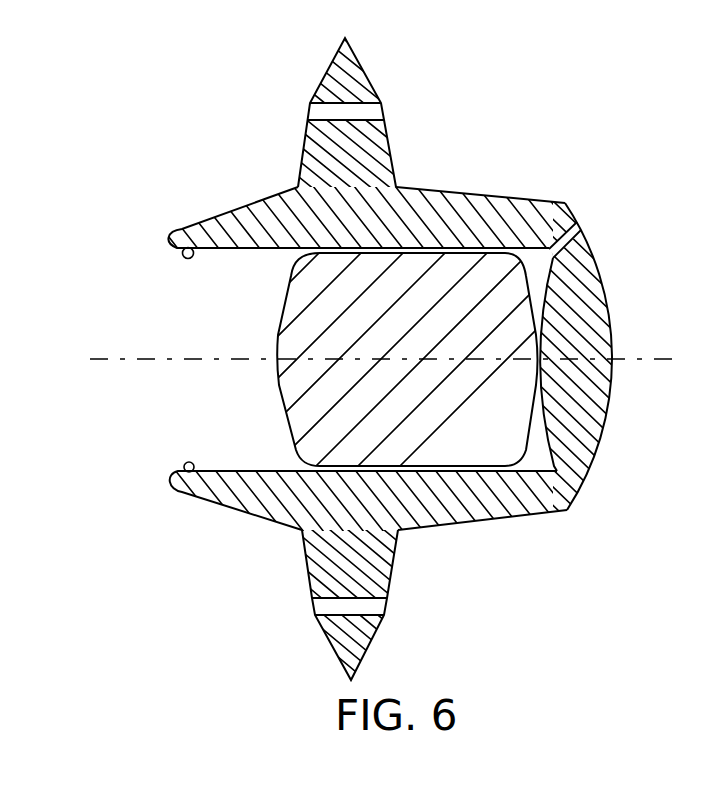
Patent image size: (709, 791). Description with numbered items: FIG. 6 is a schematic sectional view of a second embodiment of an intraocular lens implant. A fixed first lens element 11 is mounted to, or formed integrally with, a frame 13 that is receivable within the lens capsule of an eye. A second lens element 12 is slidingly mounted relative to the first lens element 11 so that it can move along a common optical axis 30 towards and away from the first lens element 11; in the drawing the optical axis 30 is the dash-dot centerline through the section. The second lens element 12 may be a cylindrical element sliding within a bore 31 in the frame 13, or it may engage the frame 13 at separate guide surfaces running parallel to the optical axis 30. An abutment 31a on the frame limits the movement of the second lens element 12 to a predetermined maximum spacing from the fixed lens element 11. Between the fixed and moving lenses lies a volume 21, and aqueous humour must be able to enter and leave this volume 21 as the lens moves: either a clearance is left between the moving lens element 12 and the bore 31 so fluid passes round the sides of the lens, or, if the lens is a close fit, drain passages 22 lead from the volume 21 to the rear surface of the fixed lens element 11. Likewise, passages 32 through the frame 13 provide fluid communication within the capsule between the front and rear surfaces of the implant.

The first lens element 11 is at (598, 305).
The second lens element 12 is at (421, 341).
The frame 13 is at (388, 148).
The volume 21 is at (532, 436).
The drain passages 22 is at (575, 232).
The optical axis 30 is at (130, 363).
The bore 31 is at (255, 251).
The abutment 31a is at (187, 259).
The passages 32 is at (383, 110).